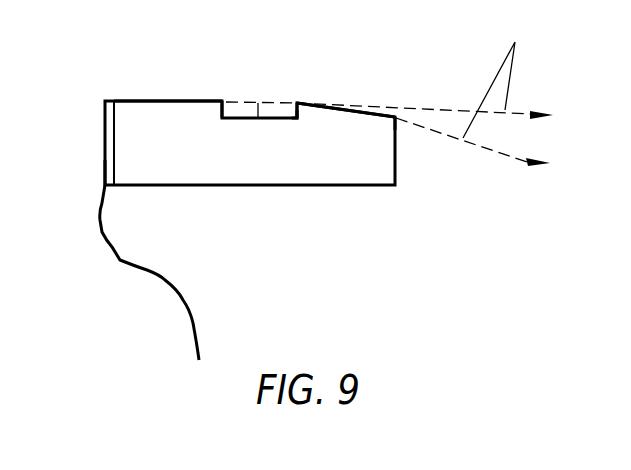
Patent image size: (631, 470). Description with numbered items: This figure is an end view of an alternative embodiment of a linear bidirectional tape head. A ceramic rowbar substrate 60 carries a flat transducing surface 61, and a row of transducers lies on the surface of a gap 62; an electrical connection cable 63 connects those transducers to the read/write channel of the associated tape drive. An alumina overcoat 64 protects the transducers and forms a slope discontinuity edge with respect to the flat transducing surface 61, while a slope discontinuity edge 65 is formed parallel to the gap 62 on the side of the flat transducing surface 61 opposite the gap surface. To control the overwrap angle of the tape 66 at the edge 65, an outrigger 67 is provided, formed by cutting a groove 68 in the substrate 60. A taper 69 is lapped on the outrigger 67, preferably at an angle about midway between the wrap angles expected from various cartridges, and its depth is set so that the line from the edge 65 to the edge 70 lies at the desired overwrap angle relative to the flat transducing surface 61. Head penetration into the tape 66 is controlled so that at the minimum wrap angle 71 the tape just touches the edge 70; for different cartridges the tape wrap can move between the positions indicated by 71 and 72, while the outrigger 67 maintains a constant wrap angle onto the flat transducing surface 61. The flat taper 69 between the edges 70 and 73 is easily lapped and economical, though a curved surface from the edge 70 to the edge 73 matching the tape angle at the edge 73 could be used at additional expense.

The ceramic rowbar substrate 60 is at (333, 186).
The flat transducing surface 61 is at (165, 100).
The gap 62 is at (110, 100).
The electrical connection cable 63 is at (100, 222).
The alumina overcoat 64 is at (105, 168).
The slope discontinuity edge 65 is at (220, 105).
The tape 66 is at (499, 76).
The outrigger 67 is at (295, 103).
The groove 68 is at (256, 103).
The taper 69 is at (345, 108).
The edge 70 is at (298, 110).
The minimum wrap angle 71 is at (440, 115).
The maximum wrap position 72 is at (490, 148).
The edge 73 is at (396, 113).